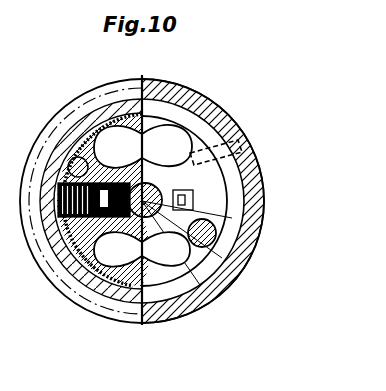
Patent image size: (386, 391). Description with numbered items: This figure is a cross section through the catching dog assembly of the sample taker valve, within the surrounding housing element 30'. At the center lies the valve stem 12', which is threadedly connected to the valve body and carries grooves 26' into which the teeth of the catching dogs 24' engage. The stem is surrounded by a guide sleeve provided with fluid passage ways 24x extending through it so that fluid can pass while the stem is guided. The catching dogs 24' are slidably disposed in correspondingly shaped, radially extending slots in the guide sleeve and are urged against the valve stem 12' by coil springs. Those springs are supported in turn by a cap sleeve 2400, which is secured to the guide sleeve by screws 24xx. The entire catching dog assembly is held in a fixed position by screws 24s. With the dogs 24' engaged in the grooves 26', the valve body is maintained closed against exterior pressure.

The fluid passage ways 24x is at (156, 133).
The screws 24s is at (240, 128).
The cap sleeve 2400 is at (208, 192).
The housing 30' is at (164, 201).
The screws 24xx is at (205, 242).
The catching dogs 24' is at (71, 210).
The grooves 26' is at (110, 255).
The valve stem 12' is at (144, 235).